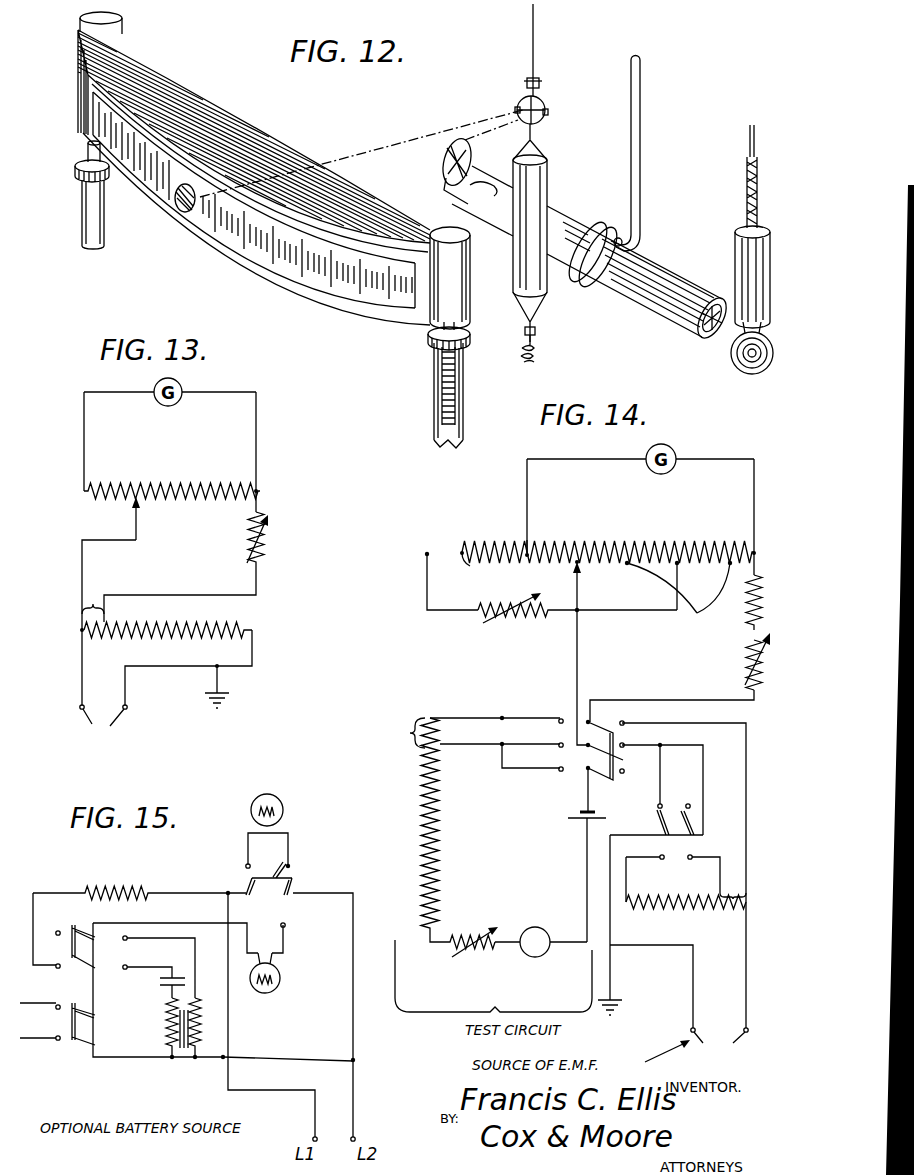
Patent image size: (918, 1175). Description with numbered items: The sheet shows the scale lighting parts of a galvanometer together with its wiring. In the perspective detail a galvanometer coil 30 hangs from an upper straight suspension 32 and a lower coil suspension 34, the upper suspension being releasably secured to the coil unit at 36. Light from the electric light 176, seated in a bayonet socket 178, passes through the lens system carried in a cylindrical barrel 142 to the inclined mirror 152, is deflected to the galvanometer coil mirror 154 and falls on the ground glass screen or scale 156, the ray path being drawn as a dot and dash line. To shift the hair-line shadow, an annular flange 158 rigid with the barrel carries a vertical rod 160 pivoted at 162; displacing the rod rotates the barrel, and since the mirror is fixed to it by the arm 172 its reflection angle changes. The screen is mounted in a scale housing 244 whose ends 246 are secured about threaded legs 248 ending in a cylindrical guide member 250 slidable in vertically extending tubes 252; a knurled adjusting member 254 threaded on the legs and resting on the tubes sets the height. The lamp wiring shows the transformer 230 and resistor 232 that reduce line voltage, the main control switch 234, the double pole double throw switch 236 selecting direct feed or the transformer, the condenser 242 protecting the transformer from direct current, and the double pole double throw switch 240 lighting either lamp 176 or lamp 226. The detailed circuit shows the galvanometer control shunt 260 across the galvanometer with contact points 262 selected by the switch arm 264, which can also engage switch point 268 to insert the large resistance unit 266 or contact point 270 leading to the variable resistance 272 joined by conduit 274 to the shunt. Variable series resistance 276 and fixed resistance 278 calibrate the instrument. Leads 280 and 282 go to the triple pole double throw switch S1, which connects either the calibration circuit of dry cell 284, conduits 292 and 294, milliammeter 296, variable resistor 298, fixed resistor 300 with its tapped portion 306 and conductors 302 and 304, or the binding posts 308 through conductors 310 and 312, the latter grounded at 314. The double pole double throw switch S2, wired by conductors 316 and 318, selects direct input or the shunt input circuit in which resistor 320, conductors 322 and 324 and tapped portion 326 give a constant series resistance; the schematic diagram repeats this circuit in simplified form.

In FIG. 12, the galvanometer coil 30 is at (548, 172).
In FIG. 12, the upper straight suspension 32 is at (540, 25).
In FIG. 12, the lower coil suspension 34 is at (545, 353).
In FIG. 12, the releasable securing point 36 is at (540, 78).
In FIG. 12, the cylindrical barrel 142 is at (652, 270).
In FIG. 12, the inclined mirror 152 is at (445, 162).
In FIG. 12, the galvanometer coil mirror 154 is at (548, 101).
In FIG. 12, the ground glass screen or scale 156 is at (190, 195).
In FIG. 12, the annular flange 158 is at (606, 228).
In FIG. 12, the vertical rod 160 is at (643, 90).
In FIG. 12, the pivot 162 is at (640, 236).
In FIG. 12, the arm 172 is at (470, 202).
In FIG. 12, the electric light 176 is at (752, 374).
In FIG. 15, the electric light 176 is at (285, 810).
In FIG. 12, the bayonet socket 178 is at (760, 256).
In FIG. 12, the scale housing 244 is at (265, 147).
In FIG. 12, the ends of the scale housing 246 is at (118, 18).
In FIG. 12, the threaded legs or supports 248 is at (88, 154).
In FIG. 12, the cylindrical guide member 250 is at (444, 403).
In FIG. 12, the vertically extending tubes 252 is at (104, 232).
In FIG. 12, the knurled adjusting member 254 is at (76, 170).
In FIG. 15, the lamp 226 is at (268, 993).
In FIG. 15, the transformer 230 is at (183, 1052).
In FIG. 15, the resistor 232 is at (137, 891).
In FIG. 15, the main control switch 234 is at (80, 1044).
In FIG. 15, the double pole double throw switch 236 is at (82, 926).
In FIG. 15, the double pole double throw switch 240 is at (294, 890).
In FIG. 15, the condenser 242 is at (165, 990).
In FIG. 13, the galvanometer control shunt 260 is at (160, 480).
In FIG. 14, the galvanometer control shunt 260 is at (694, 533).
In FIG. 14, the contact points 262 is at (678, 600).
In FIG. 14, the switch arm 264 is at (581, 575).
In FIG. 14, the resistance unit 266 is at (516, 540).
In FIG. 14, the switch point 268 is at (479, 576).
In FIG. 14, the contact point 270 is at (427, 554).
In FIG. 14, the variable resistance 272 is at (500, 630).
In FIG. 14, the conduit 274 is at (645, 616).
In FIG. 13, the variable series resistance 276 is at (262, 545).
In FIG. 14, the variable series resistance 276 is at (767, 682).
In FIG. 14, the fixed resistance 278 is at (762, 585).
In FIG. 14, the lead 280 is at (575, 675).
In FIG. 14, the lead 282 is at (668, 691).
In FIG. 14, the source of electrical current 284 is at (592, 818).
In FIG. 14, the conduit 292 is at (587, 782).
In FIG. 14, the conduit 294 is at (587, 873).
In FIG. 14, the milliammeter 296 is at (532, 968).
In FIG. 14, the variable resistor 298 is at (468, 947).
In FIG. 14, the fixed resistor 300 is at (420, 840).
In FIG. 14, the electric conductor 302 is at (457, 718).
In FIG. 14, the conductor 304 is at (469, 748).
In FIG. 14, the tapped off upper portion of resistor 306 is at (393, 733).
In FIG. 13, the binding posts 308 is at (103, 728).
In FIG. 14, the binding posts 308 is at (719, 1050).
In FIG. 14, the conductor 310 is at (746, 817).
In FIG. 14, the conductor 312 is at (645, 946).
In FIG. 13, the ground 314 is at (226, 694).
In FIG. 14, the ground 314 is at (612, 985).
In FIG. 14, the conductor 316 is at (703, 770).
In FIG. 14, the conductor 318 is at (660, 803).
In FIG. 13, the resistor 320 is at (200, 622).
In FIG. 14, the resistor 320 is at (690, 906).
In FIG. 14, the conductor 322 is at (626, 876).
In FIG. 14, the conductor 324 is at (717, 849).
In FIG. 13, the tapped off portion of resistance 326 is at (93, 603).
In FIG. 14, the tapped off portion of resistance 326 is at (733, 892).
In FIG. 14, the triple pole double throw switch S1 is at (618, 735).
In FIG. 14, the double pole double throw switch S2 is at (698, 801).